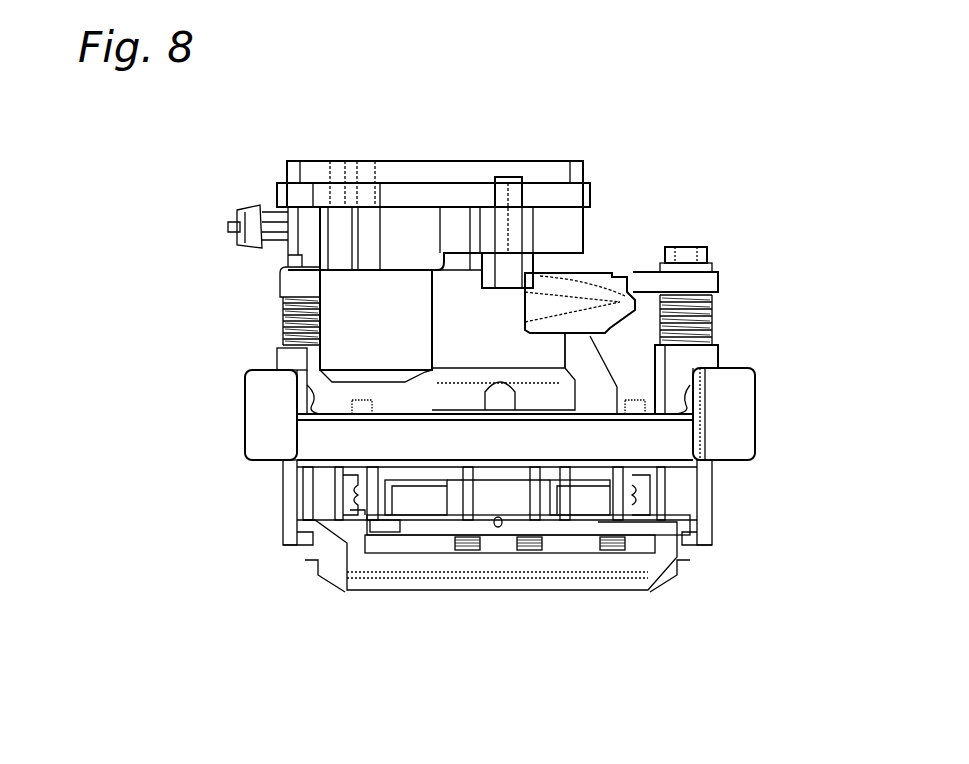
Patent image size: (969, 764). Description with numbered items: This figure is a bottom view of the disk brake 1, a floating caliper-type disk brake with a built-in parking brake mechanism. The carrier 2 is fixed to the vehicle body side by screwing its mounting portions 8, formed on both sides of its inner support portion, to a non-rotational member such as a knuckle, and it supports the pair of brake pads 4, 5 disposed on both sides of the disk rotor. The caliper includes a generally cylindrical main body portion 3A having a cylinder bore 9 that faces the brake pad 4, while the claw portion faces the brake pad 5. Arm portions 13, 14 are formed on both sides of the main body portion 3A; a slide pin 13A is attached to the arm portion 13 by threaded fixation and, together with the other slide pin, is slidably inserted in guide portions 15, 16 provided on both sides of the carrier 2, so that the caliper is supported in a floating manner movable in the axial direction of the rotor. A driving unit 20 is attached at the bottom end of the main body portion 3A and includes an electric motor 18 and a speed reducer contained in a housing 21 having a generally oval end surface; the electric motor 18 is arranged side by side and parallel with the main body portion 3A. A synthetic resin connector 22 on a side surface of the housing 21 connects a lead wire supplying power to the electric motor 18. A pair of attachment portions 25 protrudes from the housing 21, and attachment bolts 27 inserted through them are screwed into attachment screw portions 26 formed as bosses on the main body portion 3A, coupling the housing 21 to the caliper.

The disk brake 1 is at (772, 147).
The carrier 2 is at (244, 464).
The main body portion 3A is at (583, 300).
The brake pad 4 is at (595, 468).
The brake pad 5 is at (450, 527).
The mounting portion 8 is at (262, 405).
The cylinder bore 9 is at (447, 440).
The arm portion 13 is at (703, 283).
The slide pin 13A is at (700, 255).
The arm portion 14 is at (275, 285).
The guide portion 15 is at (712, 358).
The guide portion 16 is at (285, 352).
The electric motor 18 is at (330, 307).
The driving unit 20 is at (466, 158).
The housing 21 is at (357, 170).
The connector 22 is at (235, 215).
The attachment portion 25 is at (510, 225).
The attachment screw portion 26 is at (512, 312).
The attachment bolt 27 is at (515, 177).